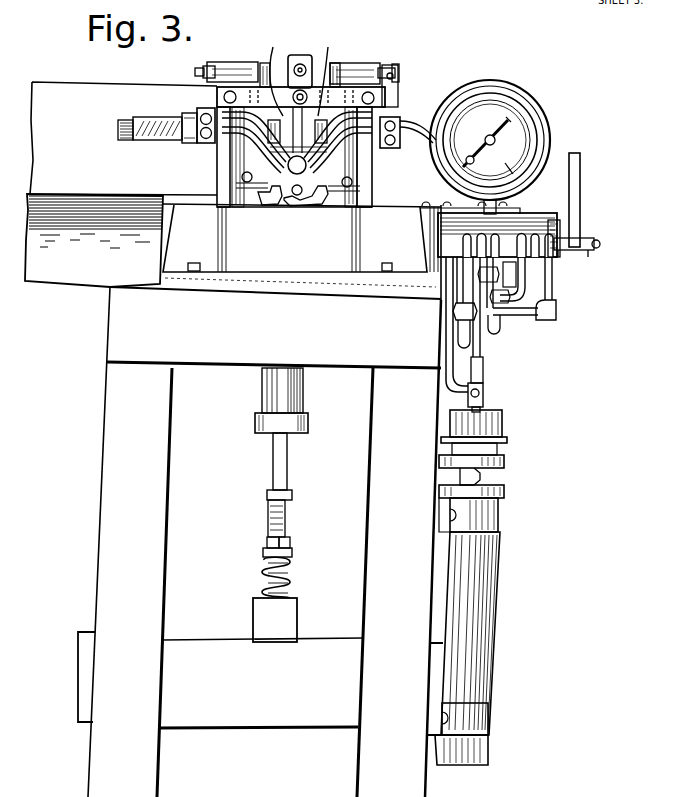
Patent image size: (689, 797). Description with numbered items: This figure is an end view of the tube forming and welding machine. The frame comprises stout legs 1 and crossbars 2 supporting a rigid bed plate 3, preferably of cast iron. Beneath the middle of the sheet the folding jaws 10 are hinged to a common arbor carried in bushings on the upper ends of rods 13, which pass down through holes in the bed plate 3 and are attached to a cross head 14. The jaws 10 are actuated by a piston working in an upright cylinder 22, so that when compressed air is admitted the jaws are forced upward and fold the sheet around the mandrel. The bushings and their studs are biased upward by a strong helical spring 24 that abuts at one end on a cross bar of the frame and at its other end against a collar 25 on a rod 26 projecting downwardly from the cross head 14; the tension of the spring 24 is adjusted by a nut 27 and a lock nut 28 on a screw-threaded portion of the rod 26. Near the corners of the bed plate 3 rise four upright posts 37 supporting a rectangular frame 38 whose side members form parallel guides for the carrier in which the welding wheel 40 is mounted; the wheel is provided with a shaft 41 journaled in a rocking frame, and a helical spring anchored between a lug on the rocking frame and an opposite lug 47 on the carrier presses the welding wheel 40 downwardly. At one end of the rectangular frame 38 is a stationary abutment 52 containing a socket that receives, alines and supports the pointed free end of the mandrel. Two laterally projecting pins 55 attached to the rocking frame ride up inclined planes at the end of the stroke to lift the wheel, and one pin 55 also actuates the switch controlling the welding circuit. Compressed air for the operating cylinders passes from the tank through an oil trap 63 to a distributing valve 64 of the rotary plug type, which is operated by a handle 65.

The legs 1 is at (103, 496).
The crossbars 2 is at (260, 663).
The bed plate 3 is at (275, 252).
The folding jaws 10 is at (307, 202).
The rods 13 is at (274, 458).
The cross head 14 is at (267, 495).
The upright cylinder 22 is at (262, 385).
The helical spring 24 is at (263, 580).
The collar 25 is at (263, 552).
The rod 26 is at (268, 522).
The nut 27 is at (290, 546).
The lock nut 28 is at (285, 540).
The upright posts 37 is at (220, 171).
The rectangular frame 38 is at (215, 96).
The welding wheel 40 is at (331, 68).
The shaft 41 is at (269, 68).
The lug 47 is at (300, 54).
The stationary abutment 52 is at (279, 200).
The laterally projecting pins 55 is at (240, 63).
The oil trap 63 is at (488, 608).
The distributing valve 64 is at (512, 232).
The handle 65 is at (580, 191).